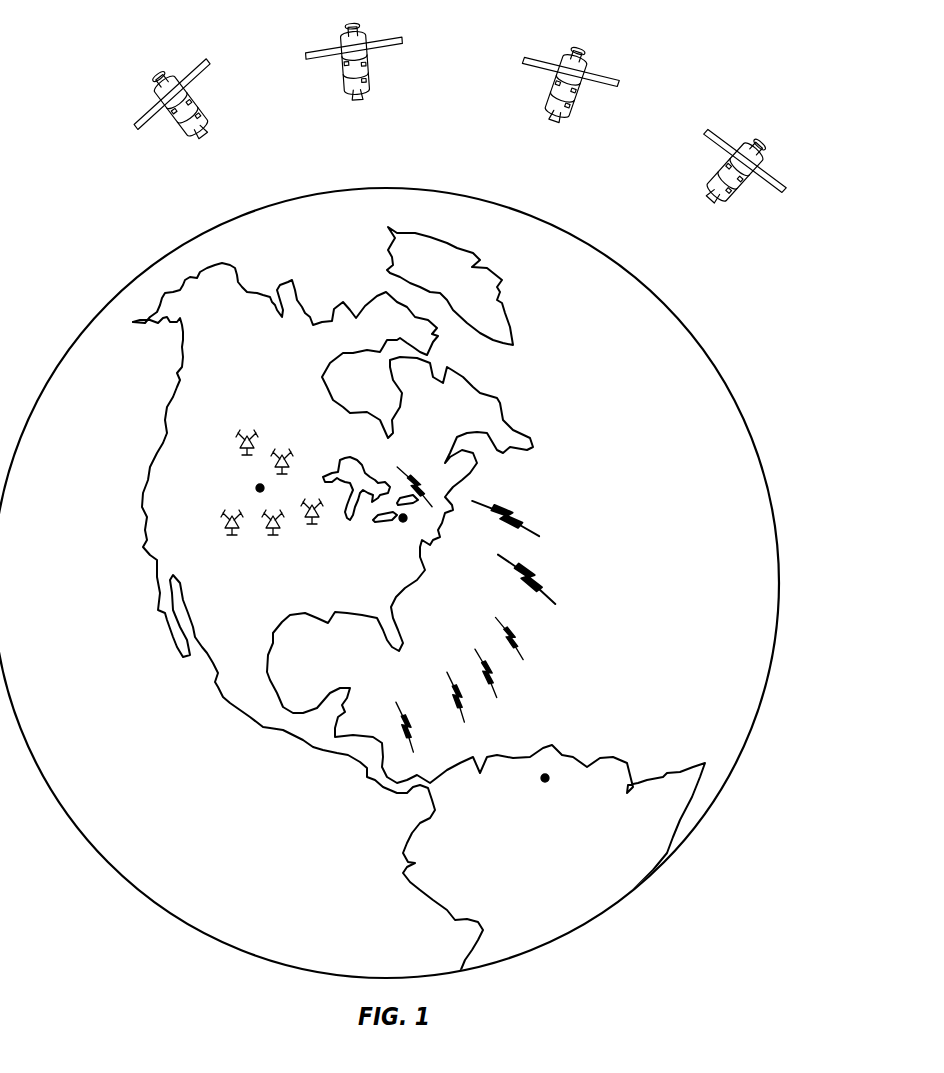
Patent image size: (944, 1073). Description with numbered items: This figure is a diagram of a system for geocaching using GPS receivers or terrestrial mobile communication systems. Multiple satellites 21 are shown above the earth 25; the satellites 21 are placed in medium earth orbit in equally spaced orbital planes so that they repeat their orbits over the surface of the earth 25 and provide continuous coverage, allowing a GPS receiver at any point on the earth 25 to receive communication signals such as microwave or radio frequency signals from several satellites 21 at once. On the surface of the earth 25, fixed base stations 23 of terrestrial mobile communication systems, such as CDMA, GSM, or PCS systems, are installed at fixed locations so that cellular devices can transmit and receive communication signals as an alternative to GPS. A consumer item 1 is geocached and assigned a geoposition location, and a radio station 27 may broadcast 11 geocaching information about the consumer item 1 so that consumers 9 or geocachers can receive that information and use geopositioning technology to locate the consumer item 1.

The consumer item 1 is at (258, 486).
The consumers 9 is at (545, 776).
The broadcast 11 is at (422, 475).
The satellites 21 is at (201, 139).
The fixed base stations 23 is at (240, 432).
The earth 25 is at (779, 593).
The radio station 27 is at (407, 518).